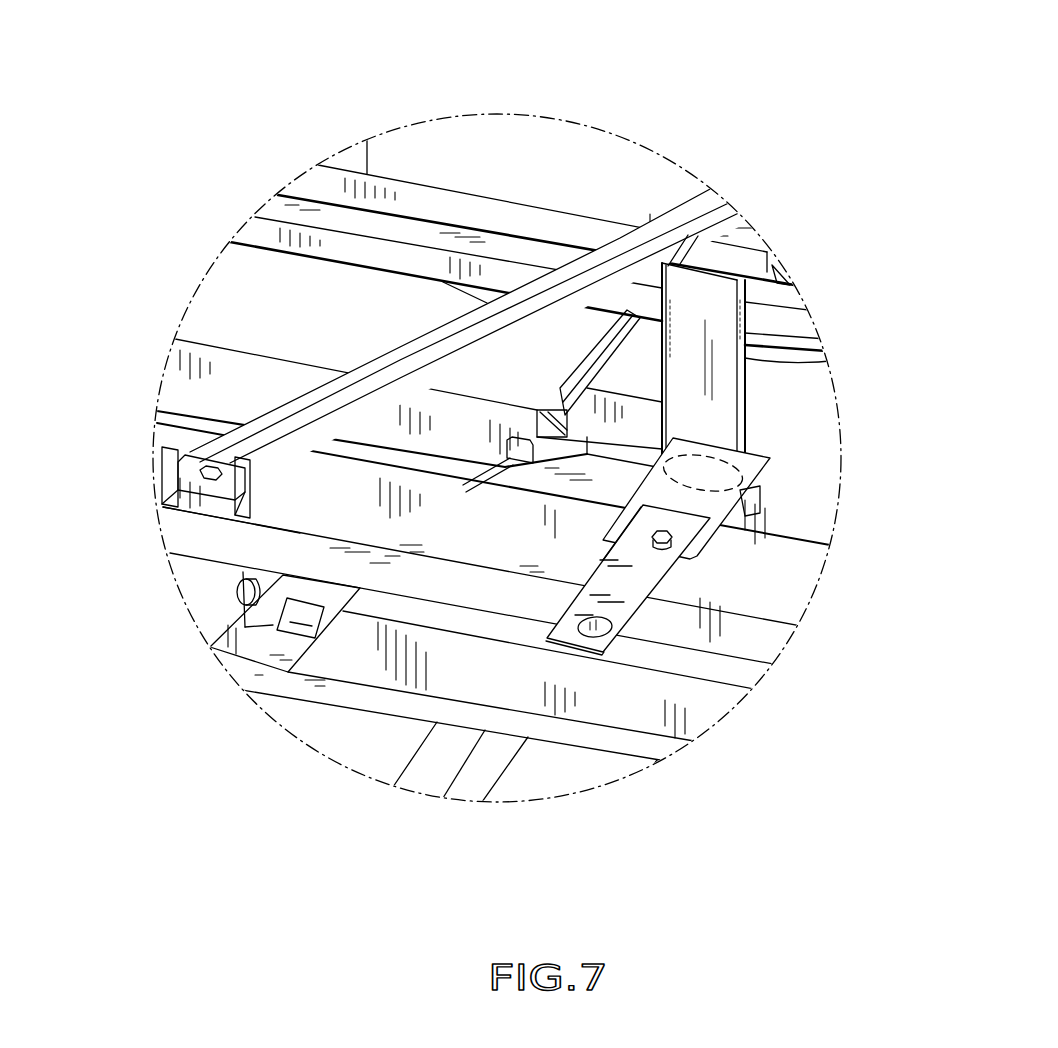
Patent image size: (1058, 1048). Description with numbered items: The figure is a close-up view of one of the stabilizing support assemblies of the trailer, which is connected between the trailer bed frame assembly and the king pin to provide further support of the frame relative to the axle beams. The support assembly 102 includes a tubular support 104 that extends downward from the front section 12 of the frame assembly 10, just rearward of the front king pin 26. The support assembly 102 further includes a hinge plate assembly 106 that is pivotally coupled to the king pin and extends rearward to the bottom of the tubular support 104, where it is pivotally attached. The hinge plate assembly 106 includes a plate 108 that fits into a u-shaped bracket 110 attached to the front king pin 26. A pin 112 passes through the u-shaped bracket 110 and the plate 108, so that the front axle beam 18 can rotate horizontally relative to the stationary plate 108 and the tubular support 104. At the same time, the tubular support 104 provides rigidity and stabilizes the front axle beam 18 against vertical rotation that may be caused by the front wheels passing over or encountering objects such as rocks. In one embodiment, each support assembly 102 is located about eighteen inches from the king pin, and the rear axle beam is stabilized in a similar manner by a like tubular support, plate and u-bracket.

The frame assembly 10 is at (508, 415).
The front section 12 is at (532, 167).
The front axle beam 18 is at (163, 528).
The front king pin 26 is at (603, 637).
The support assembly 102 is at (707, 527).
The tubular support 104 is at (707, 307).
The hinge plate assembly 106 is at (706, 624).
The plate 108 is at (780, 460).
The u-shaped bracket 110 is at (583, 657).
The pin 112 is at (676, 543).